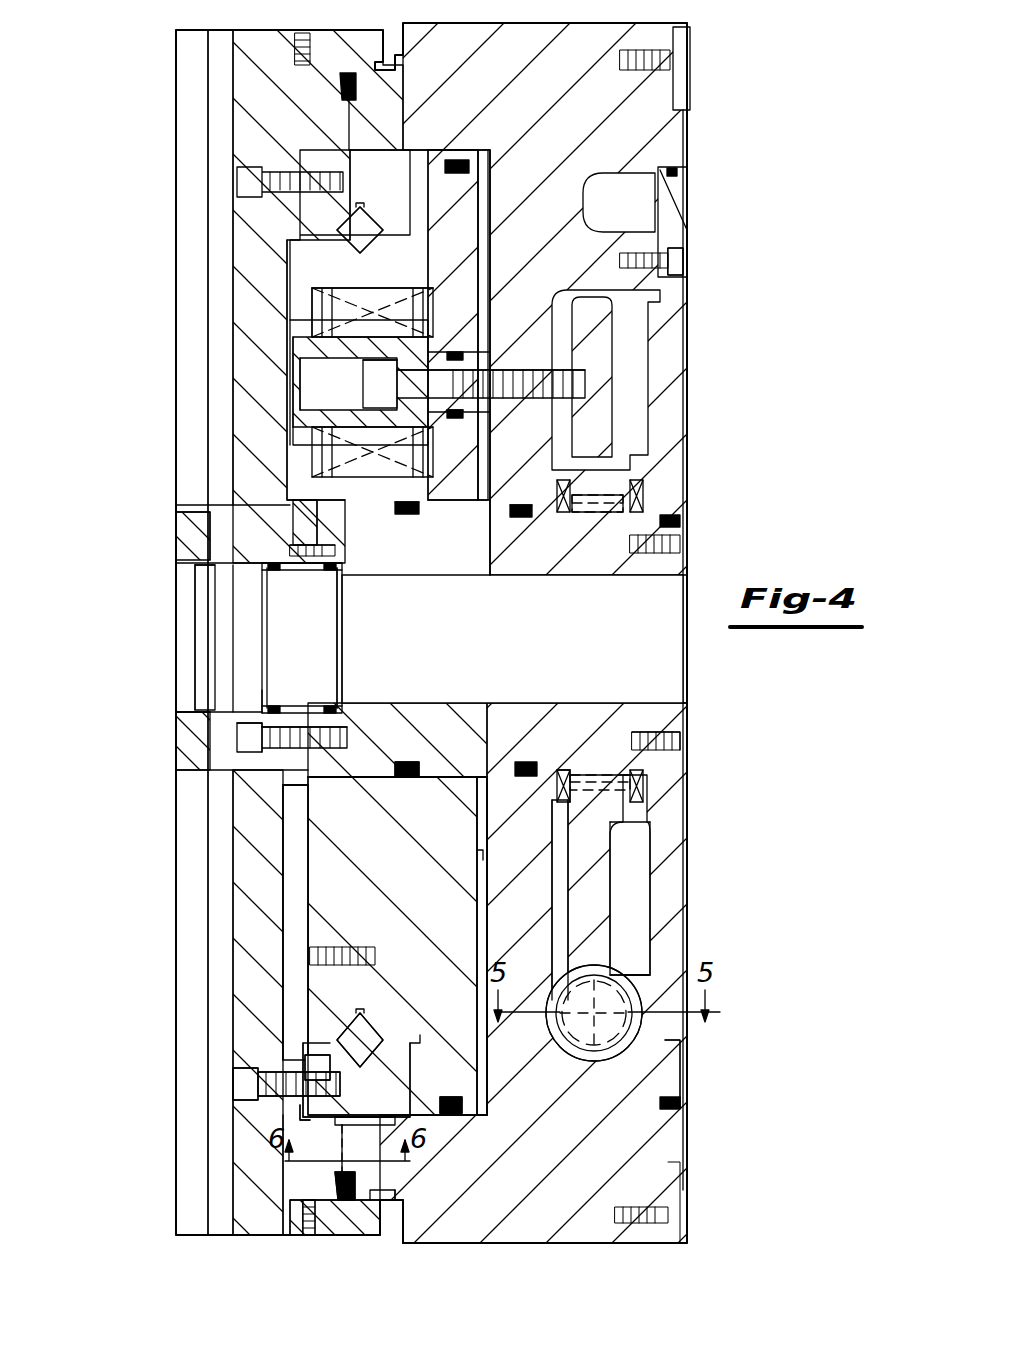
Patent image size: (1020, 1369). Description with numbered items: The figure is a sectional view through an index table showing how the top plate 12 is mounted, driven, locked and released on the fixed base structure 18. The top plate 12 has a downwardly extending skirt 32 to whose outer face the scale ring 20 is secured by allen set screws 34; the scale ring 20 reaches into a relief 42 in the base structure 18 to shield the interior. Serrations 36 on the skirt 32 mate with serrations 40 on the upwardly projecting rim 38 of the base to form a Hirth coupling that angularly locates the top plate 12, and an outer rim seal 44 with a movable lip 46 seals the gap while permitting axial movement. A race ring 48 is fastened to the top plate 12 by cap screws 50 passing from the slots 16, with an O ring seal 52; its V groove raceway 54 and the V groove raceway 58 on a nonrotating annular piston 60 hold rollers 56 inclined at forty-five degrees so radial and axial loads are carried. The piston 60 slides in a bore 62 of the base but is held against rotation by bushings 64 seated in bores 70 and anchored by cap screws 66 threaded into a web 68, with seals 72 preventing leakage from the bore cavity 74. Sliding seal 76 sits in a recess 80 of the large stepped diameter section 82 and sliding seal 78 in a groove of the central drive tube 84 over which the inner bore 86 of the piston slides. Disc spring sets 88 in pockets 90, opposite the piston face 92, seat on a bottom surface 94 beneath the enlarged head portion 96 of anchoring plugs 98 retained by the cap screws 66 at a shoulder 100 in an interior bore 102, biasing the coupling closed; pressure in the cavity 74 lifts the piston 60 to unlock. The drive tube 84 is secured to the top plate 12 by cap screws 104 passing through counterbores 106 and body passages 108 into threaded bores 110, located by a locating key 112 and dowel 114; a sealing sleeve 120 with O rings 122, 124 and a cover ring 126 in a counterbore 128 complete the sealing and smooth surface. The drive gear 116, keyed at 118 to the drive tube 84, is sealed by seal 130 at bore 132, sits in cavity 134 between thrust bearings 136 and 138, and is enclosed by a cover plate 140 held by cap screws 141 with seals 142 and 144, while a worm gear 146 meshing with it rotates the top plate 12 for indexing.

The top plate 12 is at (188, 978).
The slots 16 is at (215, 1020).
The base structure 18 is at (600, 1243).
The scale ring 20 is at (345, 1205).
The skirt portion 32 is at (300, 1185).
The allen set screws 34 is at (308, 1215).
The serrations 36 is at (305, 1118).
The rim 38 is at (355, 1215).
The mating serrations 40 is at (405, 1062).
The relief 42 is at (392, 1230).
The outer rim seal 44 is at (340, 1195).
The movable lip 46 is at (315, 1230).
The race ring 48 is at (300, 1055).
The cap screws 50 is at (240, 1085).
The O ring seal 52 is at (232, 1075).
The V groove raceway 54 is at (305, 1060).
The rollers 56 is at (350, 1030).
The V groove raceway 58 is at (400, 980).
The annular piston 60 is at (290, 880).
The bore 62 is at (440, 1100).
The bushings 64 is at (452, 345).
The cap screws 66 is at (295, 410).
The web 68 is at (530, 452).
The bores 70 is at (440, 500).
The seals 72 is at (455, 500).
The bore cavity 74 is at (480, 505).
The sliding seal 76 is at (450, 1120).
The sliding seal 78 is at (400, 765).
The recess 80 is at (455, 1108).
The large stepped diameter section 82 is at (465, 1112).
The drive tube 84 is at (430, 745).
The inner bore 86 is at (465, 770).
The disc spring sets 88 is at (320, 290).
The pockets 90 is at (345, 232).
The piston face 92 is at (478, 840).
The bottom surface 94 is at (478, 180).
The enlarged head portion 96 is at (312, 300).
The anchoring plugs 98 is at (300, 337).
The shoulder 100 is at (388, 385).
The interior bore 102 is at (372, 372).
The cap screws 104 is at (220, 700).
The counterbores 106 is at (215, 725).
The body passages 108 is at (300, 795).
The threaded bores 110 is at (360, 740).
The locating key 112 is at (300, 515).
The dowel 114 is at (300, 570).
The drive gear 116 is at (600, 860).
The key 118 is at (610, 495).
The sealing sleeve 120 is at (300, 690).
The O ring 122 is at (265, 695).
The O ring 124 is at (335, 700).
The cover ring 126 is at (195, 535).
The counterbore 128 is at (245, 737).
The seal 130 is at (525, 515).
The bore 132 is at (552, 775).
The cavity 134 is at (630, 918).
The thrust bearing 136 is at (590, 770).
The thrust bearing 138 is at (682, 715).
The cover plate 140 is at (678, 1045).
The cap screws 141 is at (675, 262).
The seal 142 is at (675, 770).
The seal 144 is at (682, 1090).
The worm gear 146 is at (640, 1000).